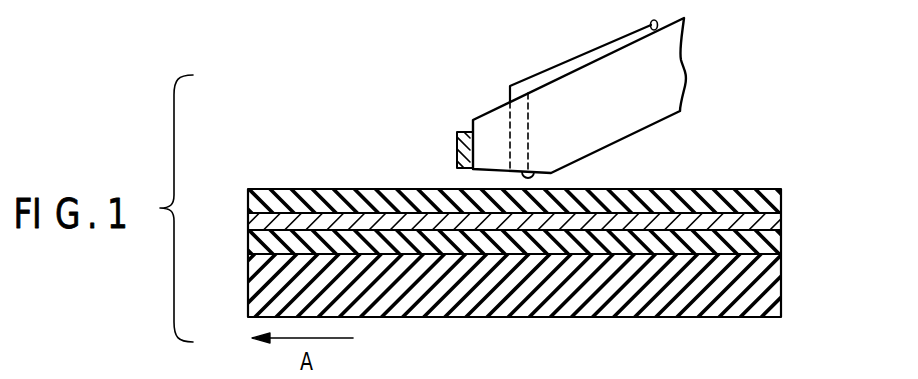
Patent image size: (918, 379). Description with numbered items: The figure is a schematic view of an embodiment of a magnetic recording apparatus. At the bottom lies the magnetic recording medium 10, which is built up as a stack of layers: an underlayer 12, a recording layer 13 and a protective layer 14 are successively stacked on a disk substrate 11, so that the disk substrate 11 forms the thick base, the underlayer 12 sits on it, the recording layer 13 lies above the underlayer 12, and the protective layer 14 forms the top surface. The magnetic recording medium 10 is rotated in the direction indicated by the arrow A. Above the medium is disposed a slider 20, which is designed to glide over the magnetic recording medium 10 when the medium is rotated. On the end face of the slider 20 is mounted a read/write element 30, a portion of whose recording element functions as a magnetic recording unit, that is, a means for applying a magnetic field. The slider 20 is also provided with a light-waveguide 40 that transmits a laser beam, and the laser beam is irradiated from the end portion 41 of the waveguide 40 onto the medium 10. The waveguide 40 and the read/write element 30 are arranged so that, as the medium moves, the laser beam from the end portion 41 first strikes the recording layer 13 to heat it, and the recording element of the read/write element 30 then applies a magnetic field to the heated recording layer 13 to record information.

The magnetic recording medium 10 is at (240, 258).
The disk substrate 11 is at (782, 284).
The underlayer 12 is at (782, 248).
The recording layer 13 is at (782, 223).
The protective layer 14 is at (782, 197).
The slider 20 is at (688, 68).
The read/write element 30 is at (456, 150).
The light-waveguide 40 is at (531, 73).
The end portion 41 is at (534, 171).